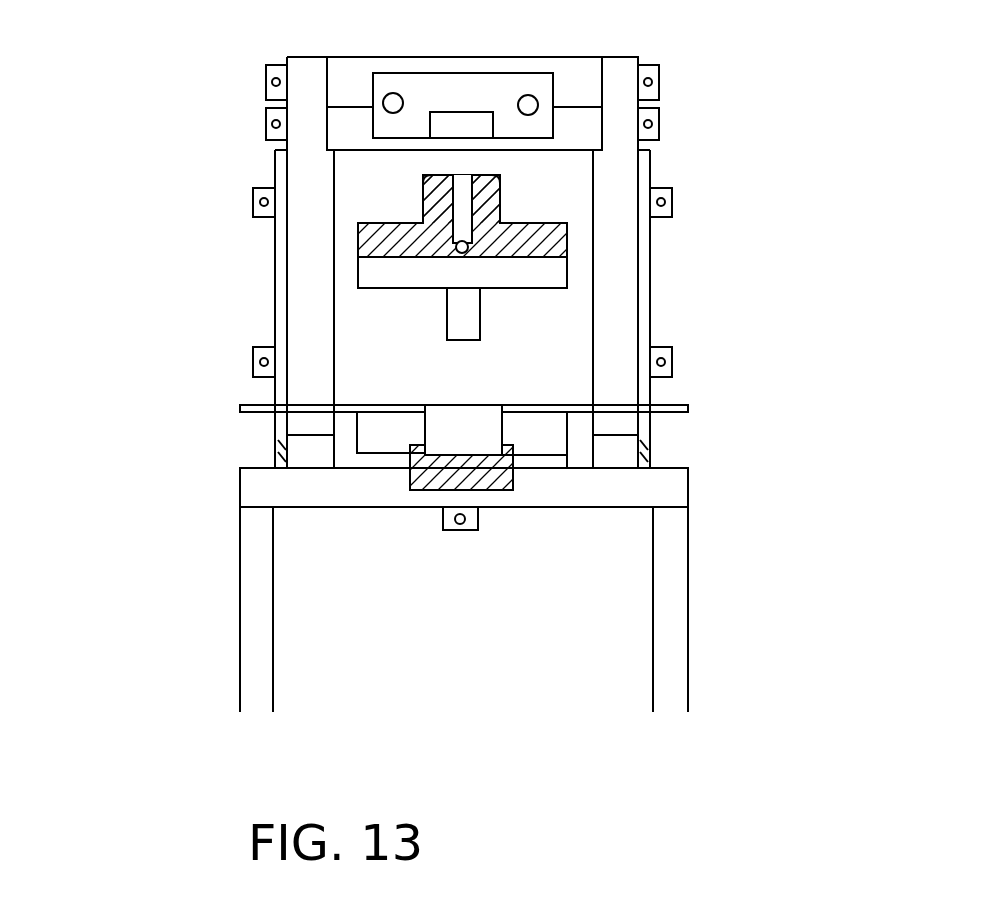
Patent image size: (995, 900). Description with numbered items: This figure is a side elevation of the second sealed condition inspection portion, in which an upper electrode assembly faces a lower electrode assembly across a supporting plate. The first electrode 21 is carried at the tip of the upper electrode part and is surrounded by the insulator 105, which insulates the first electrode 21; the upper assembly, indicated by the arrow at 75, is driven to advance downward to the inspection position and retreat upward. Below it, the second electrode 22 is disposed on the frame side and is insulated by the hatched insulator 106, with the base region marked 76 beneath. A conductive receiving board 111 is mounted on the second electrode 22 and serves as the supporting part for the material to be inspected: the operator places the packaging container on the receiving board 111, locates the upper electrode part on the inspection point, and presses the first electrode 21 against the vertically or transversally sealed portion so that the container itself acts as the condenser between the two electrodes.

The cylinder housing 75 is at (537, 205).
The insulator 105 is at (397, 222).
The first electrode 21 is at (480, 318).
The receiving board 111 is at (405, 400).
The second electrode 22 is at (505, 428).
The insulator 106 is at (420, 490).
The base 76 is at (533, 480).